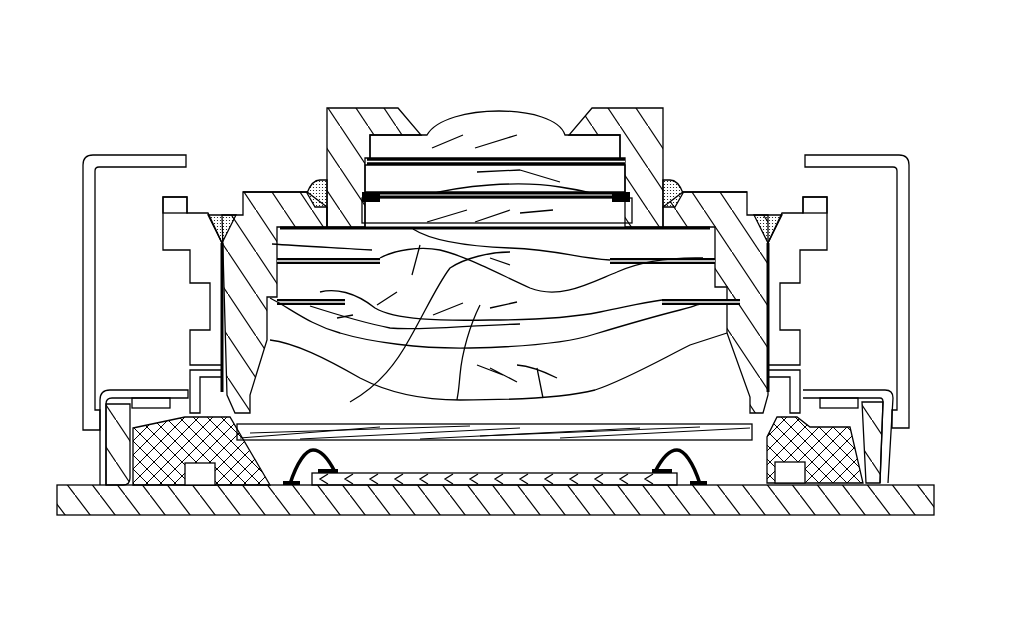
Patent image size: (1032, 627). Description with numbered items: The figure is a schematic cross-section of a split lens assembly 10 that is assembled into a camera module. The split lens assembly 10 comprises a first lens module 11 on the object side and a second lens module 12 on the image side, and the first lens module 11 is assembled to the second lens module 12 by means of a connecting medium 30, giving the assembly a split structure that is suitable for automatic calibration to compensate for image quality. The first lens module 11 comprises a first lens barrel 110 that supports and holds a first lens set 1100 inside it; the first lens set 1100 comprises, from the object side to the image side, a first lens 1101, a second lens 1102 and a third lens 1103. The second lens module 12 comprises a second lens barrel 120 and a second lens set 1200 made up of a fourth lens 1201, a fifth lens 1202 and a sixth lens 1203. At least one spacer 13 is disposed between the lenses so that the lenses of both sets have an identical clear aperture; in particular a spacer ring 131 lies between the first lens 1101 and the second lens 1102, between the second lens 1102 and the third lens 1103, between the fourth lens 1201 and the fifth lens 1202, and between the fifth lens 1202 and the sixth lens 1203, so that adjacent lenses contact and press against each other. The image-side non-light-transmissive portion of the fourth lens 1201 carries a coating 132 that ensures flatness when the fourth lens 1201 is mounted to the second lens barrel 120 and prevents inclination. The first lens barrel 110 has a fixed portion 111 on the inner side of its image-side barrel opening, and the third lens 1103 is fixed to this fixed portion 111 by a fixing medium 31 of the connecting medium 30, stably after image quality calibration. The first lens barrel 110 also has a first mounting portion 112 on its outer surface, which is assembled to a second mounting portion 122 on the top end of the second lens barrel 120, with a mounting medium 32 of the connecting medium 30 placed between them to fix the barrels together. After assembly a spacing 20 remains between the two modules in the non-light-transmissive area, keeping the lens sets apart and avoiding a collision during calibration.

The split lens assembly 10 is at (829, 64).
The first lens module 11 is at (687, 61).
The first lens barrel 110 is at (643, 155).
The fixed portion 111 is at (255, 250).
The first mounting portion 112 is at (400, 218).
The first lens set 1100 is at (575, 60).
The first lens 1101 is at (473, 142).
The second lens 1102 is at (480, 175).
The third lens 1103 is at (520, 215).
The second lens module 12 is at (782, 330).
The second lens barrel 120 is at (748, 293).
The second mounting portion 122 is at (262, 185).
The second lens set 1200 is at (628, 352).
The fourth lens 1201 is at (382, 378).
The fifth lens 1202 is at (460, 384).
The sixth lens 1203 is at (533, 378).
The spacer 13 is at (283, 226).
The spacer ring 131 is at (410, 178).
The coating 132 is at (280, 228).
The spacing 20 is at (600, 253).
The connecting medium 30 is at (783, 156).
The fixing medium 31 is at (645, 212).
The mounting medium 32 is at (683, 182).